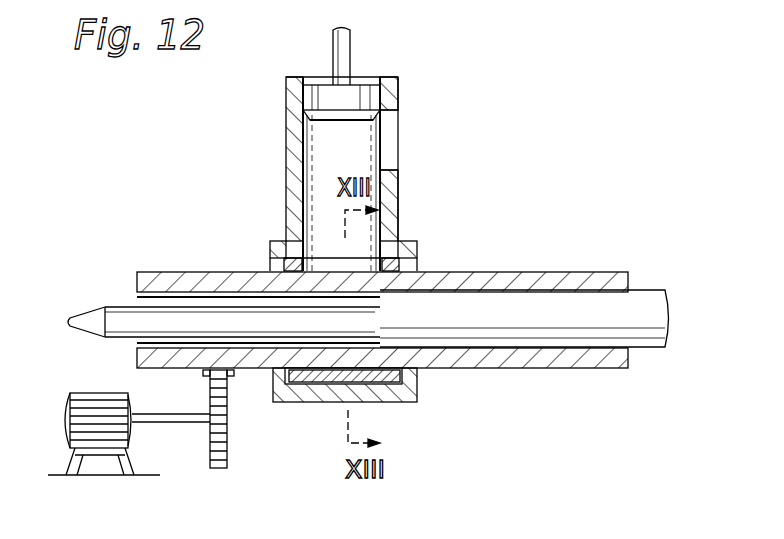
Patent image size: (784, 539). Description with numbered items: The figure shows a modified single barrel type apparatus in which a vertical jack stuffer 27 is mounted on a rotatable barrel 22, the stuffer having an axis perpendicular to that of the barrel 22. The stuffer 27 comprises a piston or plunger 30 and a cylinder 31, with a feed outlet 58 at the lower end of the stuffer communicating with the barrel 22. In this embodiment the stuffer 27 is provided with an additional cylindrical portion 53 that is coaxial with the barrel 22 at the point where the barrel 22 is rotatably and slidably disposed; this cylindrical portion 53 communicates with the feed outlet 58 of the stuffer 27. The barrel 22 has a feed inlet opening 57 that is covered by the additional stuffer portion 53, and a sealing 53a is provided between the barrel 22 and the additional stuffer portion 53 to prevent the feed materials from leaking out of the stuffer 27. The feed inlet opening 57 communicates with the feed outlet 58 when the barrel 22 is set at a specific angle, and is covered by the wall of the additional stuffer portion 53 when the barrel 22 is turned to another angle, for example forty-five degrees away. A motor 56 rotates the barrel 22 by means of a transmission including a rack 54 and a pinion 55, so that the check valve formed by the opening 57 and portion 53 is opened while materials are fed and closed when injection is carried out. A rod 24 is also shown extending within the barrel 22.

The barrel 22 is at (160, 271).
The rod 24 is at (116, 310).
The stuffer 27 is at (287, 128).
The piston or plunger 30 is at (357, 93).
The cylinder 31 is at (390, 133).
The additional cylindrical portion 53 is at (272, 250).
The sealing 53a is at (272, 262).
The rack 54 is at (205, 375).
The pinion 55 is at (228, 398).
The motor 56 is at (68, 415).
The feed inlet opening 57 is at (358, 285).
The feed outlet 58 is at (318, 181).